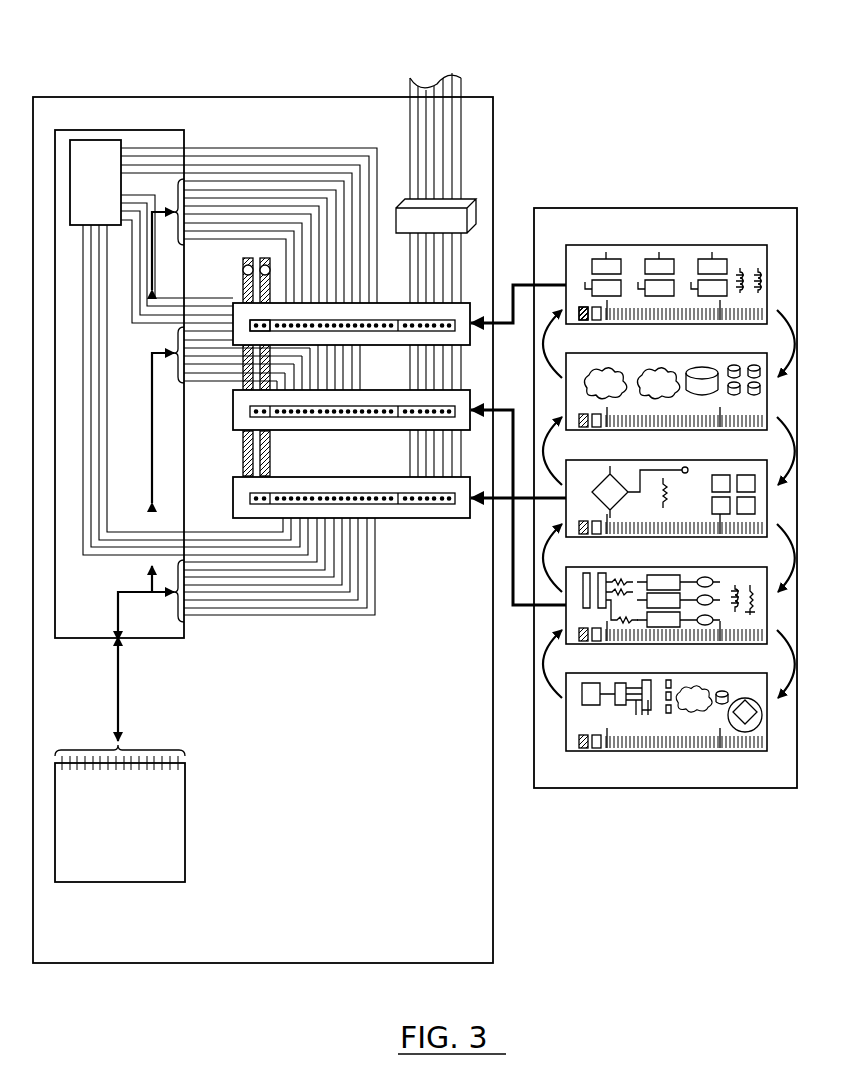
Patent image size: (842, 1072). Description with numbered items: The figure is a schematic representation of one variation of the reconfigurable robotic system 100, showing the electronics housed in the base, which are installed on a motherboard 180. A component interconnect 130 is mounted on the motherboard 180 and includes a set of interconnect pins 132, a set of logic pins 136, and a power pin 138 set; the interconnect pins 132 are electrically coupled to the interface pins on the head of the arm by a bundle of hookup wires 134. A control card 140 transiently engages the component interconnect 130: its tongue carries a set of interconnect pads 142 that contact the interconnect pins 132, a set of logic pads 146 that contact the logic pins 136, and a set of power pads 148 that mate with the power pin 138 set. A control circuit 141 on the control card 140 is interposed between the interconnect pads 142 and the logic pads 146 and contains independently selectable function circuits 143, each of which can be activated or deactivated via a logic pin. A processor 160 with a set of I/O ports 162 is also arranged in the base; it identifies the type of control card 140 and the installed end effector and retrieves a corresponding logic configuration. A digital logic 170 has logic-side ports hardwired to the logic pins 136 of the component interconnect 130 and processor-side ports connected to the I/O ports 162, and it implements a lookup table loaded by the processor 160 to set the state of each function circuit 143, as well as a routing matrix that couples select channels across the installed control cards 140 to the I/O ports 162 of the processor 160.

The reconfigurable robotic system 100 is at (680, 62).
The component interconnect 130 is at (422, 518).
The interconnect pins 132 is at (410, 320).
The hookup wires 134 is at (450, 130).
The logic pins 136 is at (285, 331).
The power pin set 138 is at (250, 325).
The control card 140 is at (730, 257).
The control circuit 141 is at (631, 266).
The interconnect pads 142 is at (760, 300).
The function circuits 143 is at (748, 697).
The logic pads 146 is at (683, 299).
The power pads 148 is at (577, 303).
The processor 160 is at (150, 848).
The I/O ports 162 is at (170, 776).
The digital logic 170 is at (153, 628).
The motherboard 180 is at (468, 908).